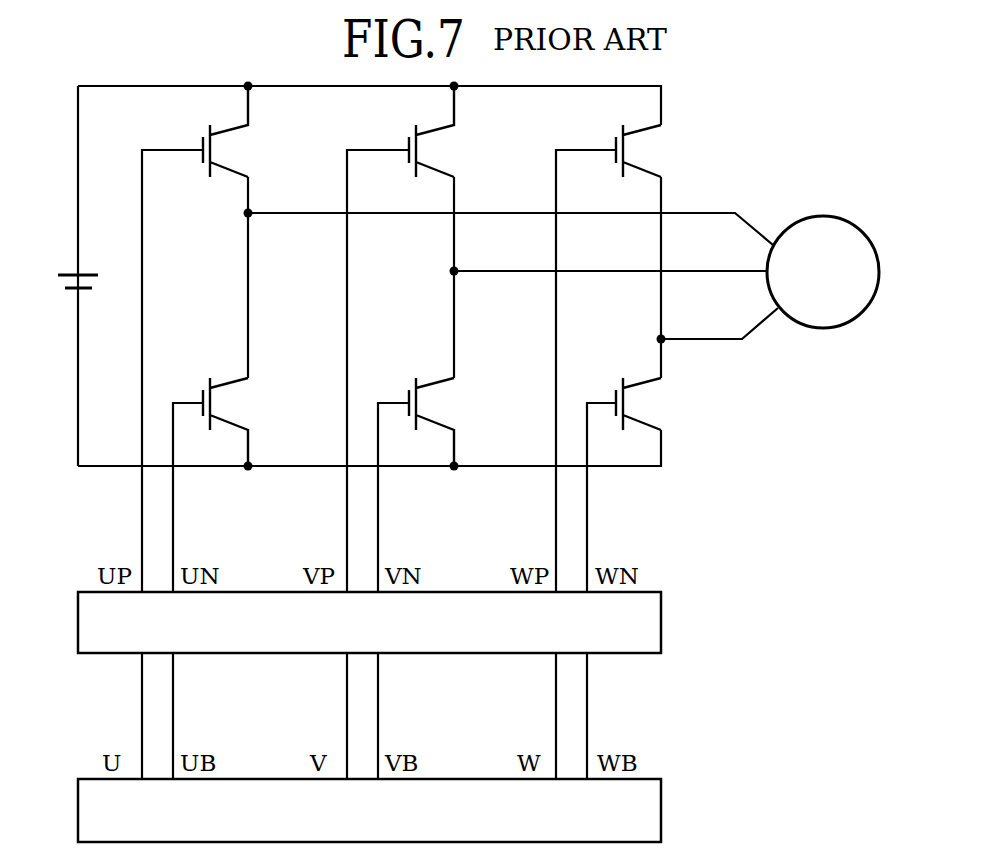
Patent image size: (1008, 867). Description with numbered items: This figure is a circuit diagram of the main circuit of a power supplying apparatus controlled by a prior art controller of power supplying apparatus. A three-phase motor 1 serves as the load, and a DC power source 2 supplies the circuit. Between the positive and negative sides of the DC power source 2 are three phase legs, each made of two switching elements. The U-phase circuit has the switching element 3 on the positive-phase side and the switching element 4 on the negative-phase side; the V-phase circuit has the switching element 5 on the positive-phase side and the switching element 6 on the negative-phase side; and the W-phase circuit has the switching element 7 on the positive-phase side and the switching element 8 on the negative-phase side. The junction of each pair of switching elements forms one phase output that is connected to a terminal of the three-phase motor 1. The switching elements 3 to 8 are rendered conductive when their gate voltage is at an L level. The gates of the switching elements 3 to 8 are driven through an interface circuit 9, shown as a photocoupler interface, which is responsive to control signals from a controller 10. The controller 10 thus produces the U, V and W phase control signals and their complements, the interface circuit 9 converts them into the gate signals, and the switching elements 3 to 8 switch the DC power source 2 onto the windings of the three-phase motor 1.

The three-phase motor 1 is at (823, 216).
The DC power source 2 is at (67, 273).
The switching element on the positive-phase side of the U-phase circuit 3 is at (244, 152).
The switching element on the negative-phase side of the U-phase circuit 4 is at (246, 404).
The switching element on the positive-phase side of the V-phase circuit 5 is at (455, 152).
The switching element on the negative-phase side of the V-phase circuit 6 is at (463, 394).
The switching element on the positive-phase side of the W-phase circuit 7 is at (664, 152).
The switching element on the negative-phase side of the W-phase circuit 8 is at (663, 404).
The interface circuit 9 is at (664, 618).
The controller 10 is at (664, 810).